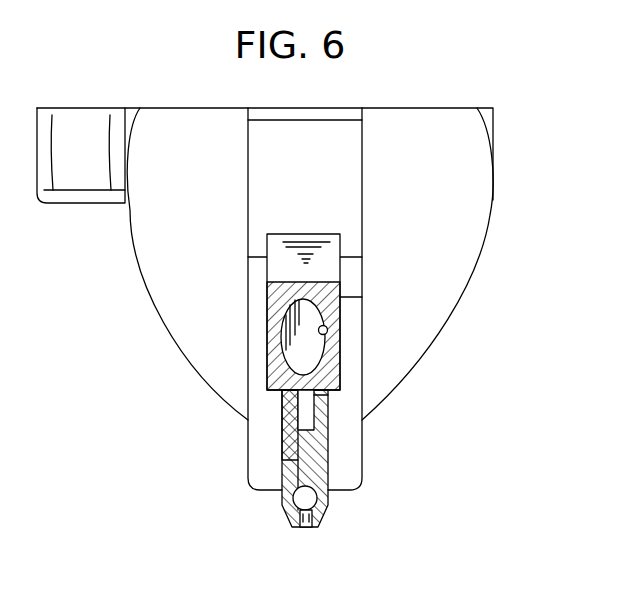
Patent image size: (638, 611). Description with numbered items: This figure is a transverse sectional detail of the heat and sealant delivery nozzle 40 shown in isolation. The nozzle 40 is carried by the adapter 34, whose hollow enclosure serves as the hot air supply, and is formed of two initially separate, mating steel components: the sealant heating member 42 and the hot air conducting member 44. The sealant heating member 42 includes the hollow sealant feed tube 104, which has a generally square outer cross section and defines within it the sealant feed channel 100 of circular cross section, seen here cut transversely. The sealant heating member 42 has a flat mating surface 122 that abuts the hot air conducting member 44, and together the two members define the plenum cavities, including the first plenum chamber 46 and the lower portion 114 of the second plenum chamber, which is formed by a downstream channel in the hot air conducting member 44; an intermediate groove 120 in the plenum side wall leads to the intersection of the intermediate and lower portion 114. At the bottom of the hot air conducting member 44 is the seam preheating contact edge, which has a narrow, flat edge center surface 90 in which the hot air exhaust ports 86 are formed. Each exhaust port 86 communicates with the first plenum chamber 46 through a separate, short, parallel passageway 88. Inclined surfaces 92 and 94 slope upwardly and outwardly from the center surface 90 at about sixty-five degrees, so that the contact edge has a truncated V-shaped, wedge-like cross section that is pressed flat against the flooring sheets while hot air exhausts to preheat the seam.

The adapter 34 is at (497, 200).
The nozzle 40 is at (228, 227).
The sealant heating member 42 is at (264, 300).
The sealant feed tube 104 is at (362, 297).
The sealant feed channel 100 is at (328, 332).
The hot air conducting member 44 is at (334, 410).
The lower portion of the second plenum chamber 114 is at (304, 412).
The intermediate groove 120 is at (318, 416).
The first plenum chamber 46 is at (331, 479).
The flat mating surface 122 is at (283, 458).
The hot air exhaust ports 86 is at (304, 530).
The flat edge center surface 90 is at (311, 530).
The inclined surface 92 is at (292, 521).
The passageways 88 is at (322, 517).
The inclined surface 94 is at (319, 528).